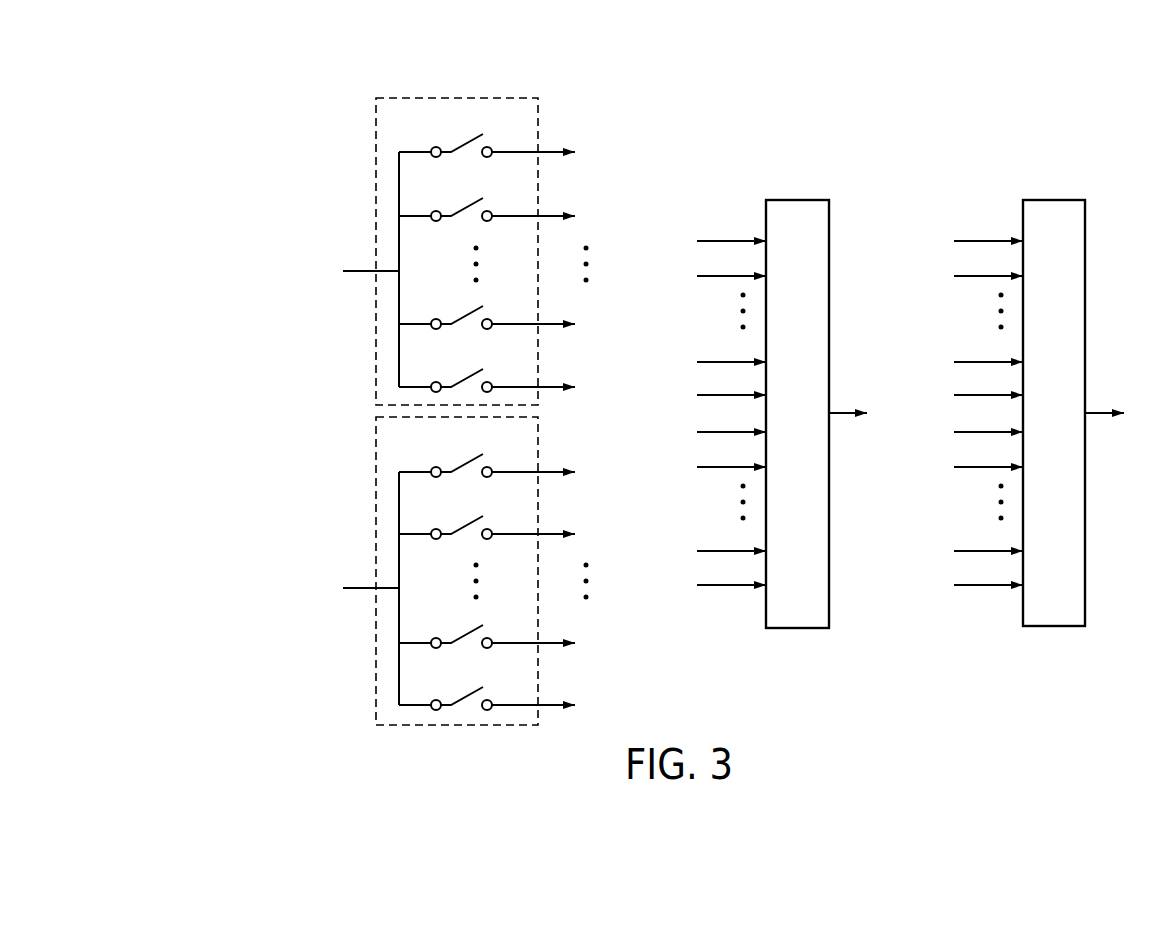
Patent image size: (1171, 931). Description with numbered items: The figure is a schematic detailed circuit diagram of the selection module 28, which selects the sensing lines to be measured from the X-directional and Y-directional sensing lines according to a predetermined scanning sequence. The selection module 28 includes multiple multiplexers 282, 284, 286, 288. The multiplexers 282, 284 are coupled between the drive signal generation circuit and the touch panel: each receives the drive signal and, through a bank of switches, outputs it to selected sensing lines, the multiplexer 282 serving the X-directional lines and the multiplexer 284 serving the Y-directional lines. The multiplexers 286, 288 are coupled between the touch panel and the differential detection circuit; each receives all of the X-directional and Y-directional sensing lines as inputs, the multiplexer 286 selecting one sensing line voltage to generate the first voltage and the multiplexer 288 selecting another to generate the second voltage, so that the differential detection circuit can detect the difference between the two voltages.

The selection module 28 is at (216, 99).
The multiplexer 282 is at (376, 152).
The multiplexer 284 is at (376, 471).
The multiplexer 286 is at (797, 628).
The multiplexer 288 is at (1054, 626).